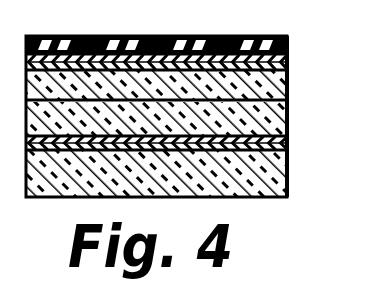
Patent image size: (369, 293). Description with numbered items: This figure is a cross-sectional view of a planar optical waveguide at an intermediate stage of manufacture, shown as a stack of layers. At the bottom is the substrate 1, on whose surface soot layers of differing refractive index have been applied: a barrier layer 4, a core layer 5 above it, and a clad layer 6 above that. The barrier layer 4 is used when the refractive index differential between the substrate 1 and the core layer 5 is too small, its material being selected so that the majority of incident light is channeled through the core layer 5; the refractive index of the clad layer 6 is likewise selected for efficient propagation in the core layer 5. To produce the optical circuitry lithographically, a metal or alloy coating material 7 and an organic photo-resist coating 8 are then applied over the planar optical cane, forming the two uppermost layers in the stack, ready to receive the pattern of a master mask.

The substrate 1 is at (282, 175).
The barrier layer 4 is at (278, 143).
The core layer 5 is at (280, 120).
The clad layer 6 is at (282, 88).
The metal or alloy coating material 7 is at (280, 62).
The organic photo-resist coating 8 is at (273, 38).